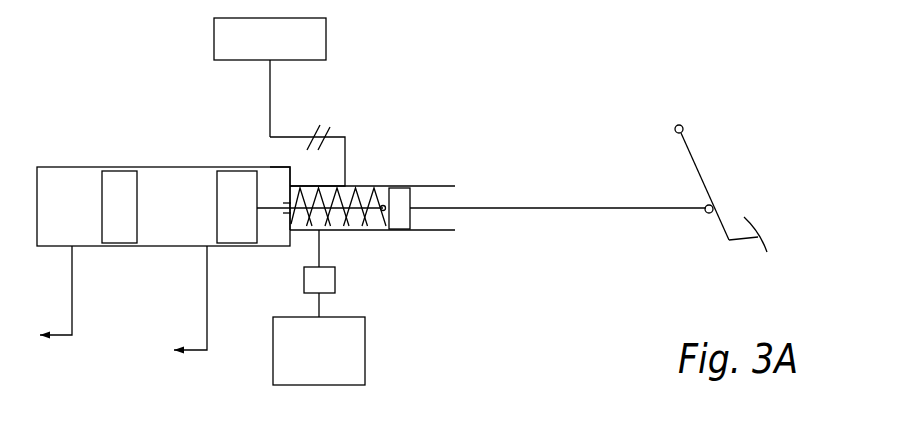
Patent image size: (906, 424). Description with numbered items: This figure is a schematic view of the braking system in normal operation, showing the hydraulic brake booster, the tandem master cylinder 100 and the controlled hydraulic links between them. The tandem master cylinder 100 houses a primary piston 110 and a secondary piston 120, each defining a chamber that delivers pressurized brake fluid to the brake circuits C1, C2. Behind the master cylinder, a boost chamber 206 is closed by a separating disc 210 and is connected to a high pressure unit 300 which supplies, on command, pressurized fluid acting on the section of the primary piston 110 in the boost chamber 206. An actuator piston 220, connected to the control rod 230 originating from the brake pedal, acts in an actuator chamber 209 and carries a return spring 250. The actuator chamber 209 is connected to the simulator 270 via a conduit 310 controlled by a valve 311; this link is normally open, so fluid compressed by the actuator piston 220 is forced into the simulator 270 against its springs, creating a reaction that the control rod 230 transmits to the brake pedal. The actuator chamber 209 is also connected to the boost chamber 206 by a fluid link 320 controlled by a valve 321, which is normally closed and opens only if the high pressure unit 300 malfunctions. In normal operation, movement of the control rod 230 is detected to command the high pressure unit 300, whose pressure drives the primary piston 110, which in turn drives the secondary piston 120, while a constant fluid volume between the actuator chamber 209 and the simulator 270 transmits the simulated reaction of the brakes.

The tandem master cylinder 100 is at (167, 157).
The primary piston 110 is at (237, 207).
The secondary piston 120 is at (119, 207).
The boost chamber 206 is at (273, 235).
The actuator chamber 209 is at (363, 220).
The separating disc 210 is at (288, 178).
The actuator piston 220 is at (408, 110).
The control rod 230 is at (541, 207).
The return spring 250 is at (364, 190).
The simulator 270 is at (365, 361).
The high pressure unit 300 is at (270, 77).
The conduit 310 is at (320, 250).
The valve 311 is at (320, 282).
The fluid link 320 is at (283, 137).
The valve 321 is at (330, 127).
The brake circuit C1 is at (190, 300).
The brake circuit C2 is at (54, 292).